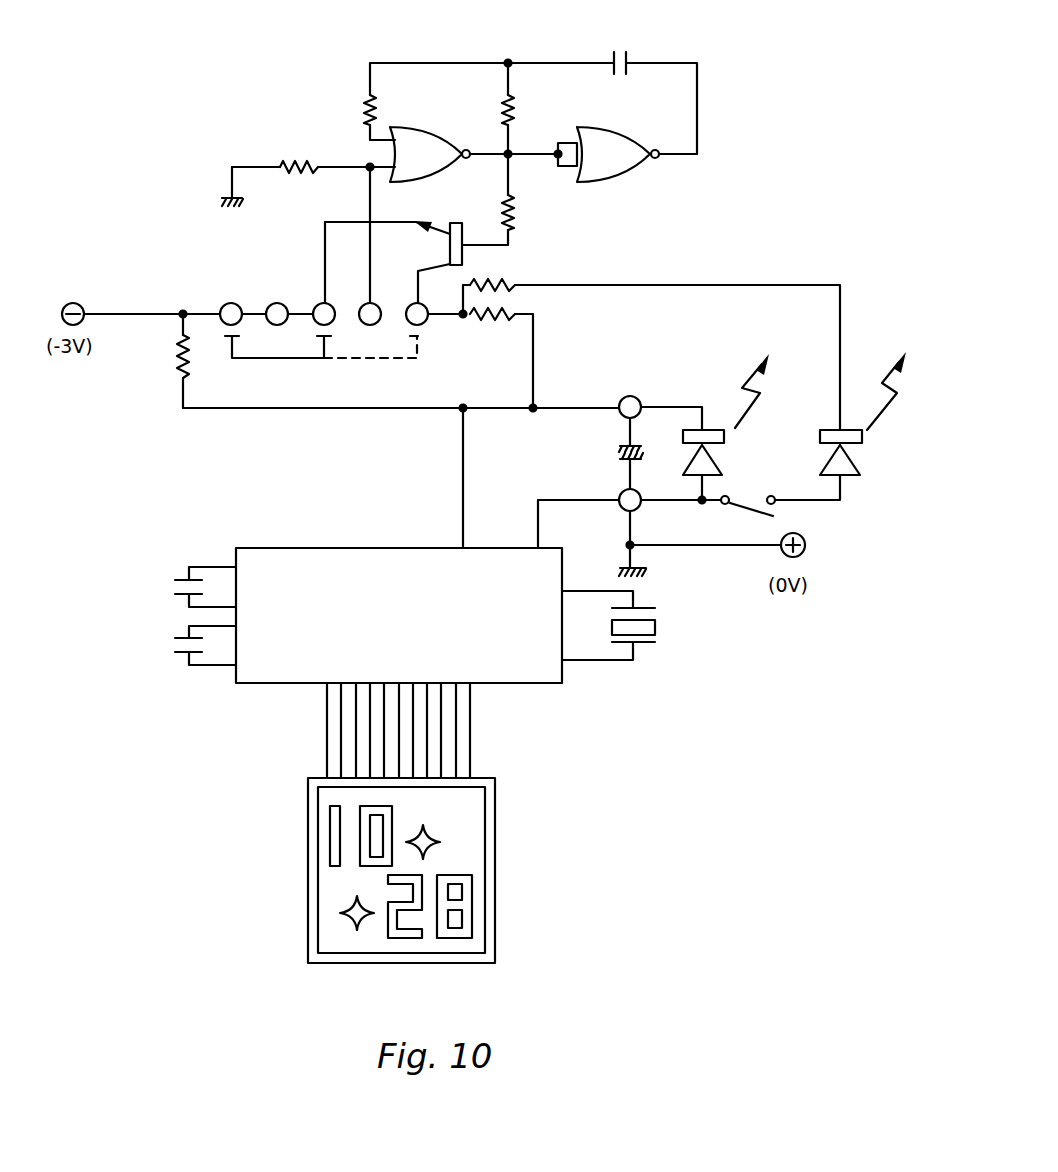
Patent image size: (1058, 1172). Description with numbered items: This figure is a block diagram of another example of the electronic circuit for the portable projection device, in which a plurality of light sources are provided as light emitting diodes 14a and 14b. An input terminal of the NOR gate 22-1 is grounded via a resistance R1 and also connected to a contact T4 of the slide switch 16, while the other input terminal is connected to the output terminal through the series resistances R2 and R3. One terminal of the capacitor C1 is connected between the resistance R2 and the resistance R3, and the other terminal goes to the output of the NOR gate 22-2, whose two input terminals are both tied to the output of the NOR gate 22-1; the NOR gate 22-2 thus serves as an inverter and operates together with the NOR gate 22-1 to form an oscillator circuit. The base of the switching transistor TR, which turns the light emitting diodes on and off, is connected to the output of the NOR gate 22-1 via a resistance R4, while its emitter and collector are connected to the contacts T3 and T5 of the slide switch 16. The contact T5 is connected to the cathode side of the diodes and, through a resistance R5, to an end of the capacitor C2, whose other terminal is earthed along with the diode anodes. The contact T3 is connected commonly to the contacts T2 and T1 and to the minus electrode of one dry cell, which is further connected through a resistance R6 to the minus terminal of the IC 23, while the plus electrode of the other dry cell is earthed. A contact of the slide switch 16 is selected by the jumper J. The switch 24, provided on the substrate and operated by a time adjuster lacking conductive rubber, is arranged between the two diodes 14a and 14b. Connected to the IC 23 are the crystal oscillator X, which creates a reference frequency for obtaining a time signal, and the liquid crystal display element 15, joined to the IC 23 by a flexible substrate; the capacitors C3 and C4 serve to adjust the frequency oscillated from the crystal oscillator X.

The capacitor C1 is at (628, 50).
The resistance R1 is at (306, 162).
The resistance R2 is at (380, 112).
The resistance R3 is at (514, 106).
The resistance R4 is at (514, 212).
The resistance R5 is at (496, 324).
The resistance R6 is at (178, 353).
The NOR gate 22-1 is at (438, 128).
The NOR gate 22-2 is at (617, 128).
The switching transistor TR is at (464, 255).
The contact T1 is at (233, 302).
The contact T2 is at (281, 302).
The contact T3 is at (330, 304).
The contact T4 is at (377, 304).
The contact T5 is at (424, 304).
The jumper J is at (245, 362).
The slide switch 16 is at (308, 358).
The capacitor C2 is at (617, 450).
The light emitting diode 14a is at (724, 462).
The light emitting diode 14b is at (862, 462).
The switch 24 is at (744, 511).
The IC 23 is at (357, 547).
The capacitor C3 is at (176, 586).
The capacitor C4 is at (176, 646).
The crystal oscillator X is at (657, 628).
The liquid crystal display element 15 is at (475, 851).